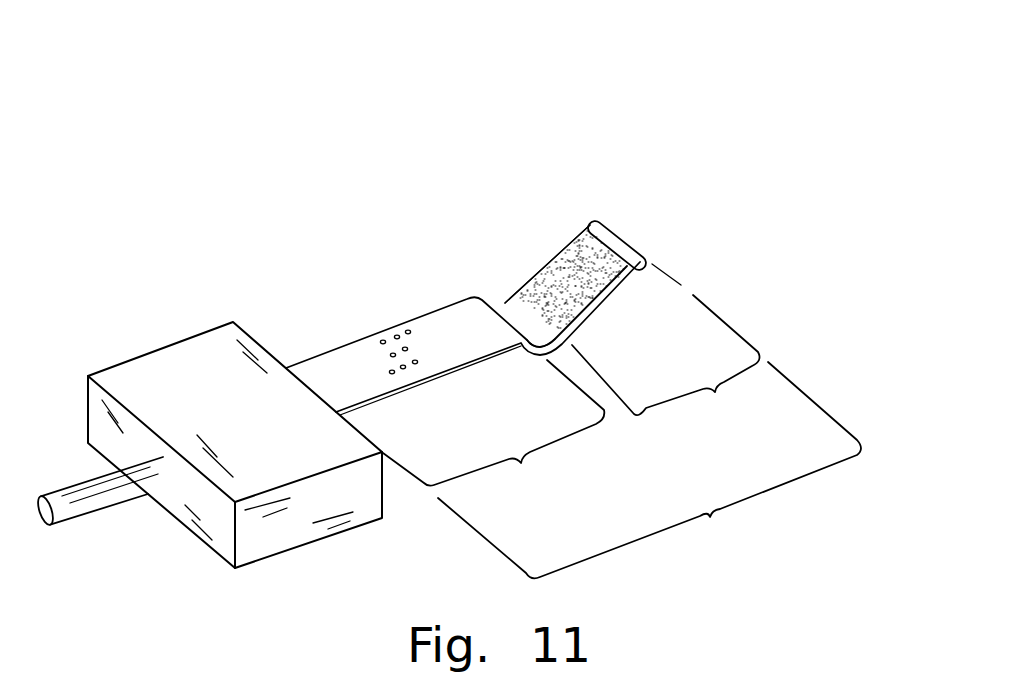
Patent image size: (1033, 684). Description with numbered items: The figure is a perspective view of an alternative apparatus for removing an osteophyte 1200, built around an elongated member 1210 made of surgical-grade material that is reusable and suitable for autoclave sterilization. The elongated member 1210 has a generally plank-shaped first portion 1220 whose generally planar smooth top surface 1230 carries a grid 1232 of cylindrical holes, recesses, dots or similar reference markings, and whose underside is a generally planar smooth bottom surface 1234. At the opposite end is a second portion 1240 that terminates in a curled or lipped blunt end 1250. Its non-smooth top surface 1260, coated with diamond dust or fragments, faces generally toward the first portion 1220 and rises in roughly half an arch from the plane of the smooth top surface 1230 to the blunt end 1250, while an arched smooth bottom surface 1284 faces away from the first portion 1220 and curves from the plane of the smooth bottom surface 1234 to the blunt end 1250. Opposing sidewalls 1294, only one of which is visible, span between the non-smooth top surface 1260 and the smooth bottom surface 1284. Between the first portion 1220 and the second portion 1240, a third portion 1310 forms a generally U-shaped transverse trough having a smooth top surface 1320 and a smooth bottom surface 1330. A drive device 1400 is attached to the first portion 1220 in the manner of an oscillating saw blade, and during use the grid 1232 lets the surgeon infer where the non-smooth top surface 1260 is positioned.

The apparatus for removing an osteophyte 1200 is at (152, 174).
The elongated member 1210 is at (649, 470).
The first portion 1220 is at (493, 427).
The smooth top surface 1230 is at (447, 326).
The grid 1232 is at (367, 307).
The smooth bottom surface 1234 is at (440, 397).
The second portion 1240 is at (680, 358).
The blunt end 1250 is at (625, 231).
The non-smooth top surface 1260 is at (579, 233).
The smooth bottom surface 1284 is at (603, 311).
The sidewalls 1294 is at (637, 266).
The third portion 1310 is at (474, 259).
The smooth top surface 1320 is at (620, 256).
The smooth bottom surface 1330 is at (571, 364).
The drive device 1400 is at (153, 350).